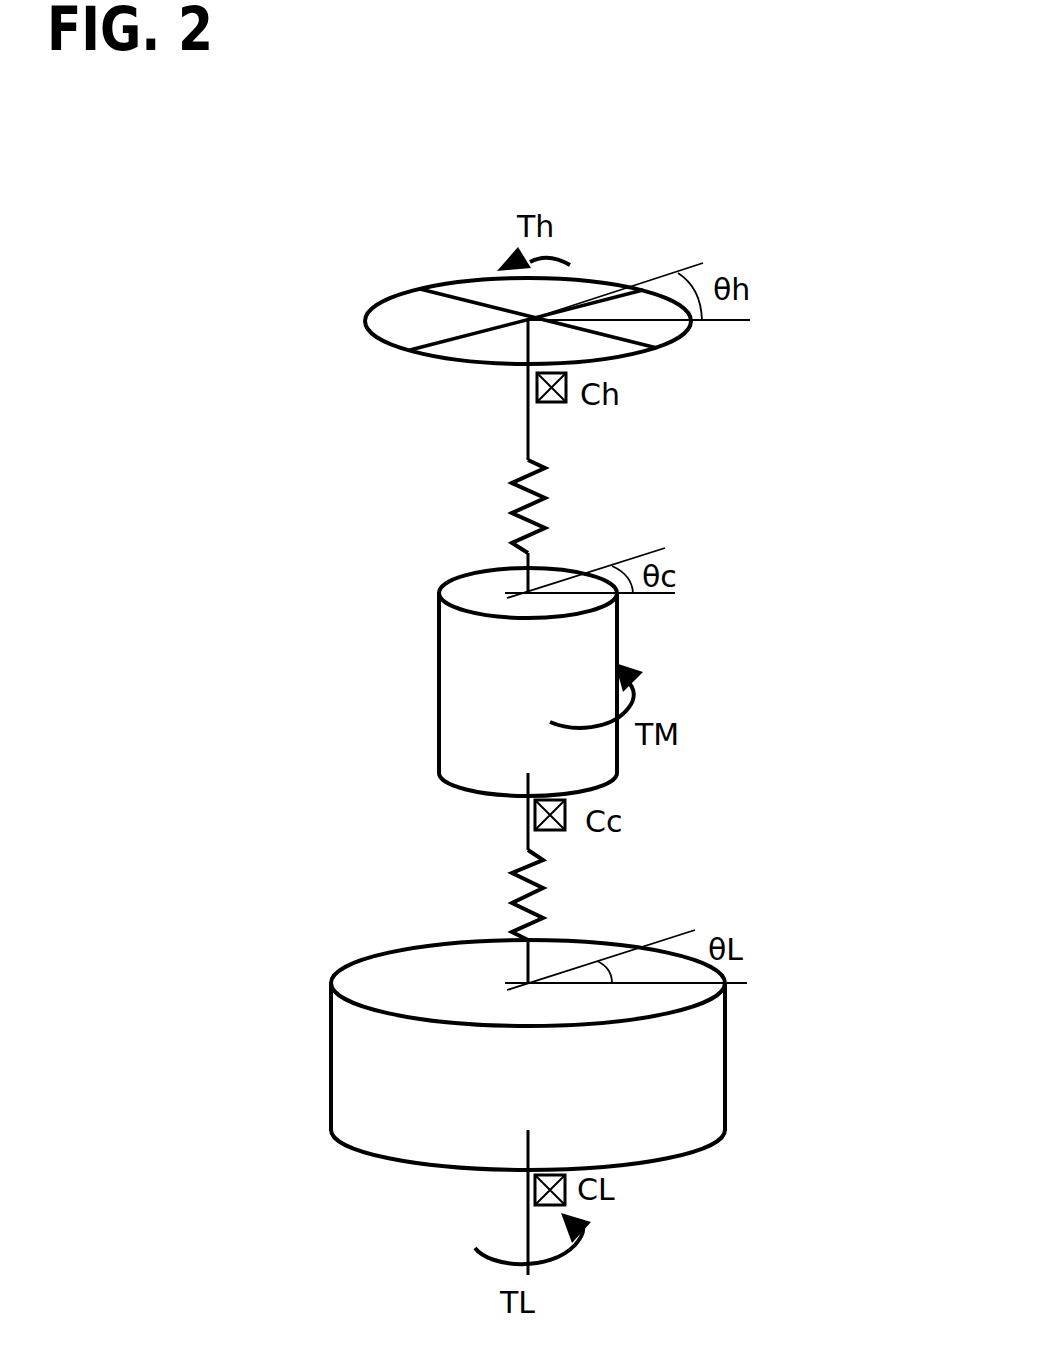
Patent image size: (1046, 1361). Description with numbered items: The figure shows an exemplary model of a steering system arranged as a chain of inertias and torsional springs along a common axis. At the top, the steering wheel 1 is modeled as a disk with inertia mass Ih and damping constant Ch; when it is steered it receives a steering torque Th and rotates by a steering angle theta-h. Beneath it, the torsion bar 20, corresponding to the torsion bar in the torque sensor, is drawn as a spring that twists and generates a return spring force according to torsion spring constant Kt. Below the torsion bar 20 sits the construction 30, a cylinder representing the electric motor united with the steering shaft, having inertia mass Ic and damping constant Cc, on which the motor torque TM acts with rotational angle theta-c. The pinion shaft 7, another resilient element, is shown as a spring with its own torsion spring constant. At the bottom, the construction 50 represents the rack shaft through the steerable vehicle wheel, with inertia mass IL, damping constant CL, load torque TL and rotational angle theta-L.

The steering wheel 1 is at (662, 350).
The torsion bar 20 is at (545, 494).
The construction 30 is at (617, 640).
The pinion shaft 7 is at (543, 888).
The construction 50 is at (724, 1050).